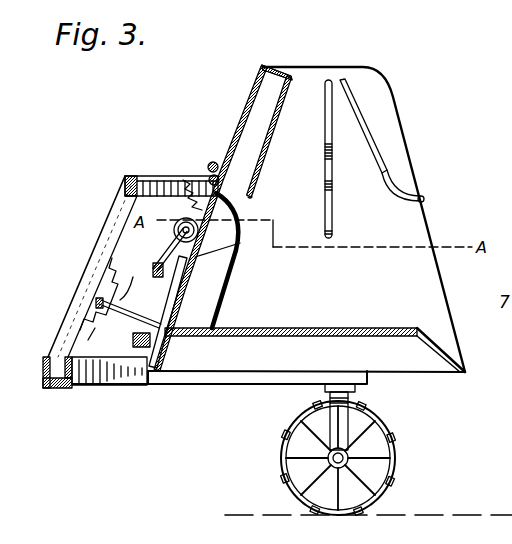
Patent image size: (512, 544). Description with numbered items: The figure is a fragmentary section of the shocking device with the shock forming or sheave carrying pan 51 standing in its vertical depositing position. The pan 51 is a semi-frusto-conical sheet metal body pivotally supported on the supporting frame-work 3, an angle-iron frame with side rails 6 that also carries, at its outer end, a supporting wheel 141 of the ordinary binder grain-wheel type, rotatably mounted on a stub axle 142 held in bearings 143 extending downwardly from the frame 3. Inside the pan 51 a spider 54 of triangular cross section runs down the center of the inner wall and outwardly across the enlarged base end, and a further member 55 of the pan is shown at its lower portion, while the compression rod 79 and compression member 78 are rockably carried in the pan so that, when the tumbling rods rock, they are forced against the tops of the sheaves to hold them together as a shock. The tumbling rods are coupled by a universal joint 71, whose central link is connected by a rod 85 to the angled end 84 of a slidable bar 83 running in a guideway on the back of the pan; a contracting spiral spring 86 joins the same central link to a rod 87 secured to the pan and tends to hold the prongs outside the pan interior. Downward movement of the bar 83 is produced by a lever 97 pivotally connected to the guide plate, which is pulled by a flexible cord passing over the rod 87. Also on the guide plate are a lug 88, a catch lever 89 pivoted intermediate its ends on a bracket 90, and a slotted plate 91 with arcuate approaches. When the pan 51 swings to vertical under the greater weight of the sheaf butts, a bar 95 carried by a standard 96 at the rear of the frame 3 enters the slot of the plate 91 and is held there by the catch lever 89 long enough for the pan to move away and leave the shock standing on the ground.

The supporting frame-work 3 is at (115, 211).
The side rail 6 is at (50, 388).
The shock forming or sheave carrying pan 51 is at (442, 291).
The spider 54 is at (267, 172).
The bottom plate 55 is at (379, 331).
The universal joint 71 is at (230, 262).
The compression member 78 is at (325, 124).
The compression rod 79 is at (390, 178).
The slidable bar 83 is at (163, 350).
The angled end 84 is at (152, 268).
The rod 85 is at (177, 233).
The contracting spiral spring 86 is at (182, 178).
The rod 87 is at (212, 161).
The lug 88 is at (160, 312).
The catch lever 89 is at (118, 304).
The bracket 90 is at (138, 320).
The plate 91 is at (91, 341).
The bar 95 is at (110, 286).
The standard 96 is at (110, 247).
The lever 97 is at (134, 341).
The supporting wheel 141 is at (393, 457).
The stub axle 142 is at (328, 462).
The bearings 143 is at (343, 410).